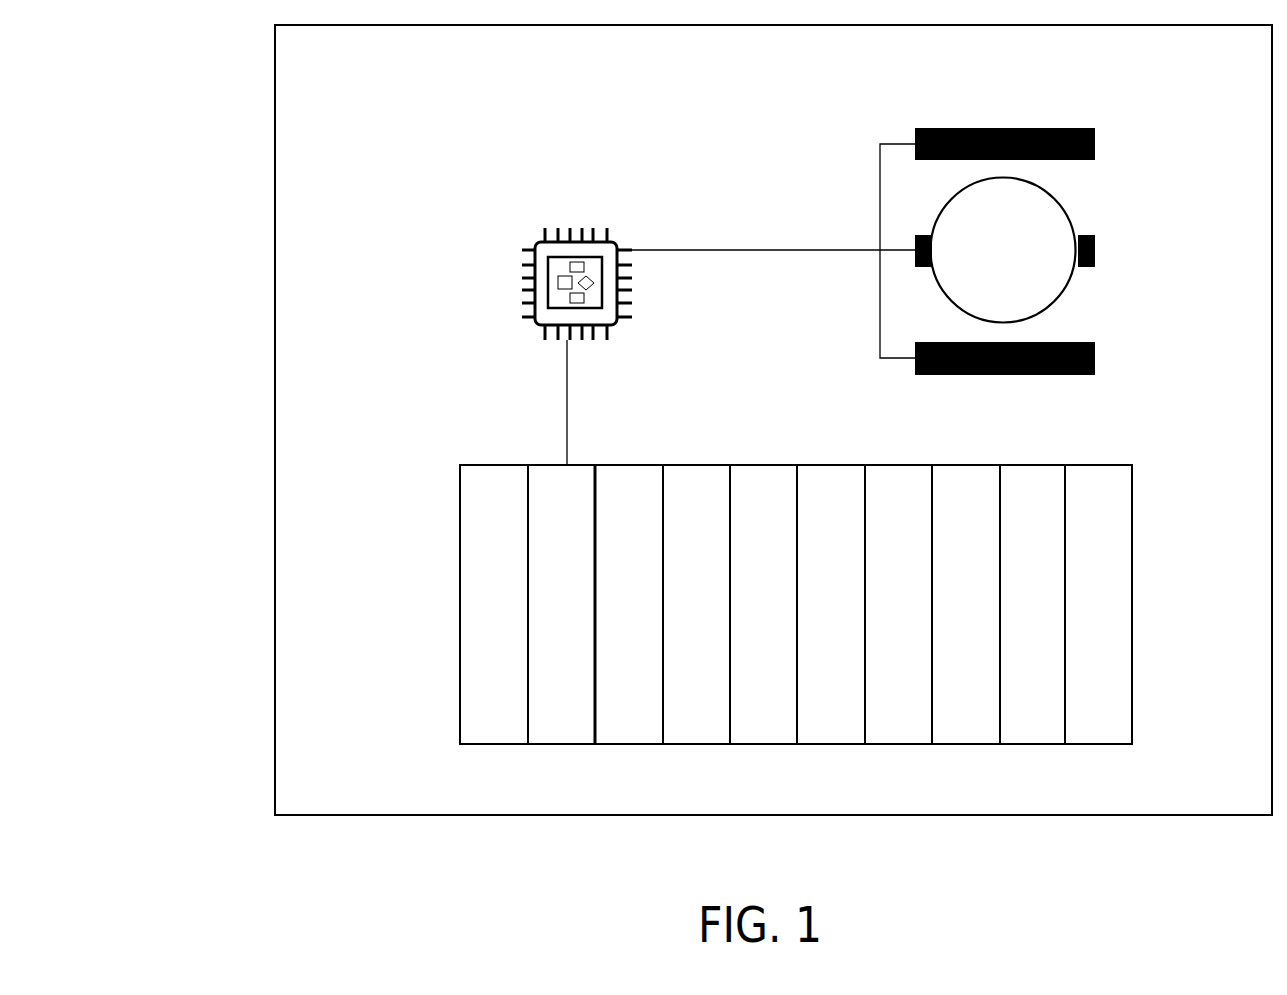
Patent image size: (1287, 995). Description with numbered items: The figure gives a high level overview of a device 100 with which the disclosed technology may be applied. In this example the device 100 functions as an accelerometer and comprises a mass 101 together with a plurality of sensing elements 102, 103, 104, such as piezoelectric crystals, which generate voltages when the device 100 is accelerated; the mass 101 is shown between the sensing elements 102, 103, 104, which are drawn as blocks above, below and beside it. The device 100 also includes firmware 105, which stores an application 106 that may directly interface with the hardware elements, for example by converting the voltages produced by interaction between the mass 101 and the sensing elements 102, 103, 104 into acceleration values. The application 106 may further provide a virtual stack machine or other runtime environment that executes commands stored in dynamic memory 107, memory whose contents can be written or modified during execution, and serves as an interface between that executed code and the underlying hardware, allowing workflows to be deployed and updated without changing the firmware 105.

The device 100 is at (150, 178).
The mass 101 is at (1070, 212).
The sensing element 102 is at (1022, 128).
The sensing element 103 is at (1092, 268).
The sensing element 104 is at (1030, 375).
The firmware 105 is at (535, 243).
The application 106 is at (597, 257).
The dynamic memory 107 is at (462, 535).